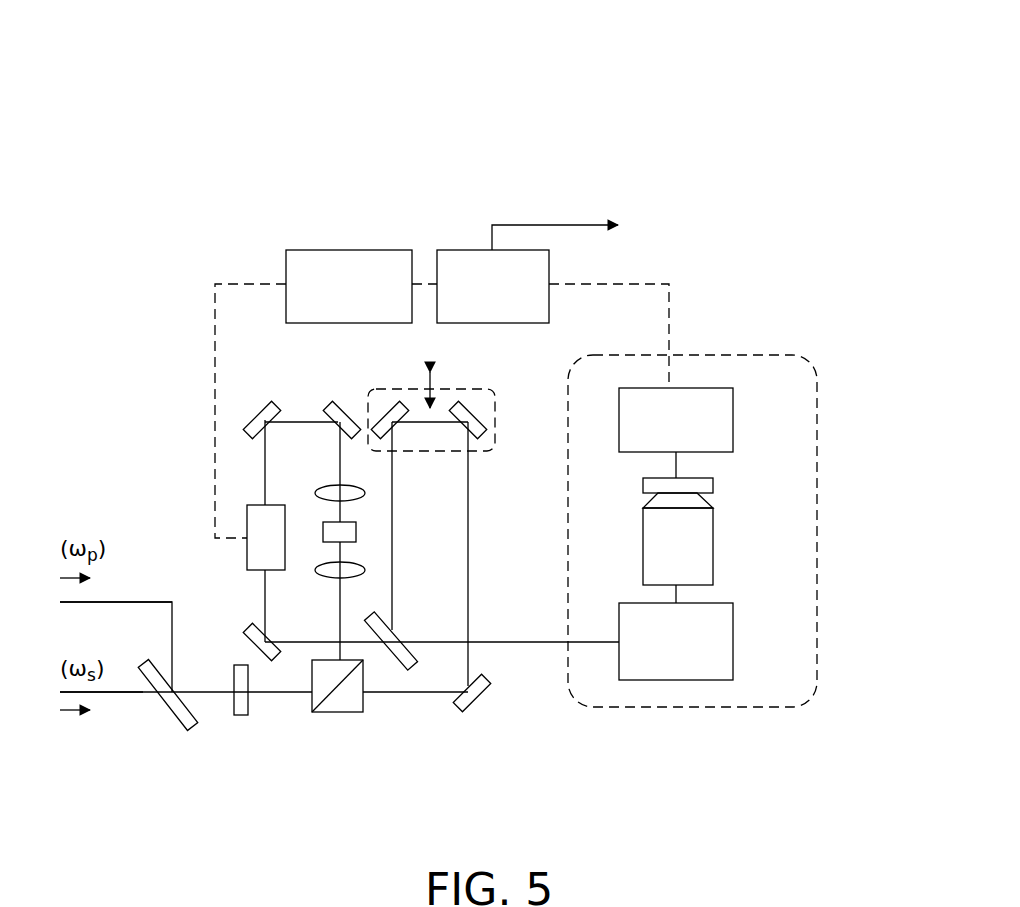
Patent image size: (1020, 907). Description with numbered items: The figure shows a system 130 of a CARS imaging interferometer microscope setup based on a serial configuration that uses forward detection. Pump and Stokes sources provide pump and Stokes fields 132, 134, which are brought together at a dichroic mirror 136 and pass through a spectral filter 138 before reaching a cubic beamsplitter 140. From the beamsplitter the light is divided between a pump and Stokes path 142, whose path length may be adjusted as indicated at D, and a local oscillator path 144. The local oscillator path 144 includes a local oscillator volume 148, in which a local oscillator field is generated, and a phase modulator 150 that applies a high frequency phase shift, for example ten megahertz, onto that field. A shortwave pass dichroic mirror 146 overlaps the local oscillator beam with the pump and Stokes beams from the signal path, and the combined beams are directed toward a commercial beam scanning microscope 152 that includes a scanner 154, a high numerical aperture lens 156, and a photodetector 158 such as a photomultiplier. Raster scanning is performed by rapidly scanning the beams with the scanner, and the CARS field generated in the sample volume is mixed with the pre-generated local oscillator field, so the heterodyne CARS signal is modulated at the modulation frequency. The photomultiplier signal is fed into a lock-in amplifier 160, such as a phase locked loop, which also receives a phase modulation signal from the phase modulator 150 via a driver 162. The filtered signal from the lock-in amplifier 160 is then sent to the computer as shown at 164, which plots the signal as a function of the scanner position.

The system 130 is at (714, 90).
The pump field 132 is at (143, 601).
The Stokes field 134 is at (125, 694).
The dichroic mirror 136 is at (180, 722).
The spectral filter 138 is at (243, 716).
The cubic beamsplitter 140 is at (341, 713).
The pump and Stokes path 142 is at (500, 386).
The local oscillator path 144 is at (310, 404).
The shortwave pass dichroic mirror 146 is at (397, 635).
The local oscillator volume 148 is at (323, 525).
The phase modulator 150 is at (247, 553).
The beam scanning microscope 152 is at (817, 465).
The scanner 154 is at (733, 645).
The high numerical aperture lens 156 is at (708, 502).
The photodetector 158 is at (733, 425).
The lock-in amplifier 160 is at (465, 250).
The driver 162 is at (345, 250).
The computer output 164 is at (556, 225).